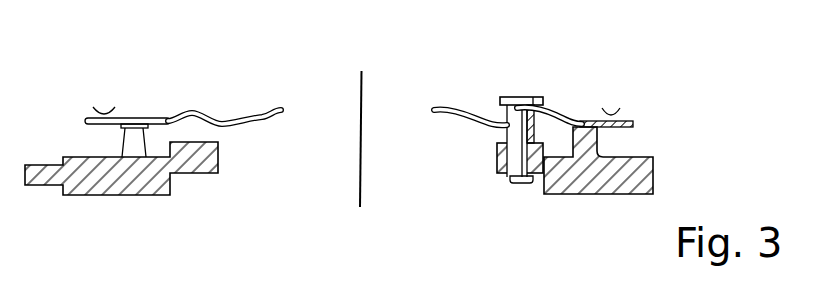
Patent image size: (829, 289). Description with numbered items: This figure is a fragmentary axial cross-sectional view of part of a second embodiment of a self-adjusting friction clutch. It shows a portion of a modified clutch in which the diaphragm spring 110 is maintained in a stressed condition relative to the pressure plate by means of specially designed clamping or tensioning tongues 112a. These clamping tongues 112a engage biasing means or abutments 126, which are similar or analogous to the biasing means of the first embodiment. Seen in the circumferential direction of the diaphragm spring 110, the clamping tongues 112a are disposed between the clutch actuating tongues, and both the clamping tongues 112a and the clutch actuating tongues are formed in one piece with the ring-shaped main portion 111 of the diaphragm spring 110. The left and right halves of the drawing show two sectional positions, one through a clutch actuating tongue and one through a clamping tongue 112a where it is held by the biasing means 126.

The diaphragm spring 110 is at (96, 116).
The ring-shaped main portion 111 is at (628, 121).
The clamping tongues 112a is at (555, 108).
The biasing means 126 is at (513, 135).